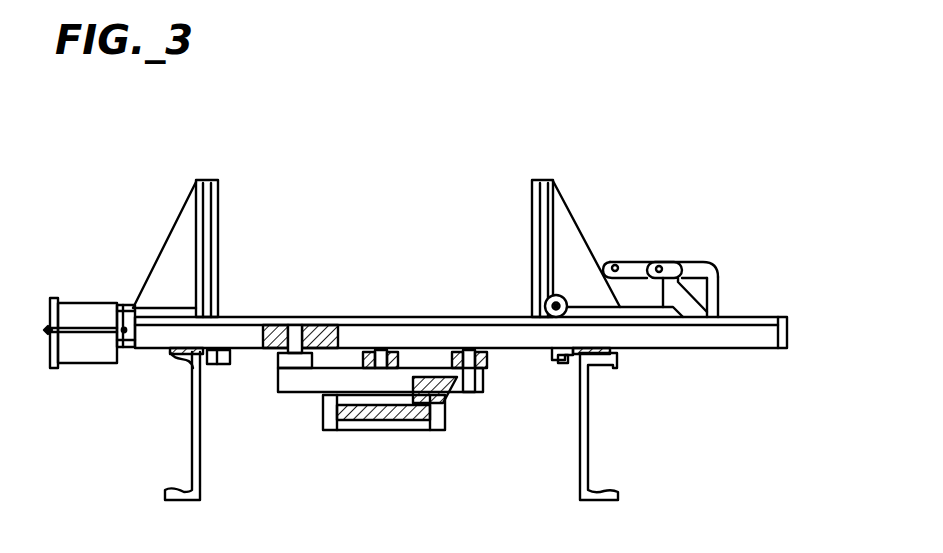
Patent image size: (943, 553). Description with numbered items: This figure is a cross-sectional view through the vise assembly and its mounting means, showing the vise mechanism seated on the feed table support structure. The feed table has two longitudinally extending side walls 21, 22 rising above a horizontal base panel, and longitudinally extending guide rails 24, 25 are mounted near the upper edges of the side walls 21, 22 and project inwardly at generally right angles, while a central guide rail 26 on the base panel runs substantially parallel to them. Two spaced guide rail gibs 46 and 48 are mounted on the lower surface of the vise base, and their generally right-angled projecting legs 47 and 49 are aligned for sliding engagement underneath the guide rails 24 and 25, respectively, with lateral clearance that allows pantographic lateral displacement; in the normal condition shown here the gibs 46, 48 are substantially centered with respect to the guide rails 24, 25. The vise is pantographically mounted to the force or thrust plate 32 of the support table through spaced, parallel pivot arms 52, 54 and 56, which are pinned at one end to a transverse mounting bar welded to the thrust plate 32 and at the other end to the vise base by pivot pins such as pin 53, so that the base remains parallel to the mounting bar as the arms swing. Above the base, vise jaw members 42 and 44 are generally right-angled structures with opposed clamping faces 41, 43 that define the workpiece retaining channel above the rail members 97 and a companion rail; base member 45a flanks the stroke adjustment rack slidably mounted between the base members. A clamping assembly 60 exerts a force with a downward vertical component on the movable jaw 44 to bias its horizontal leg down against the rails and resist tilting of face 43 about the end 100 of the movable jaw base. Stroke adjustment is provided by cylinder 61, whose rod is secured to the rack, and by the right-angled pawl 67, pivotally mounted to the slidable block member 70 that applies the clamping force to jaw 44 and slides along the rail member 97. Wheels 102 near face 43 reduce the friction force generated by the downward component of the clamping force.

The side wall 21 is at (192, 453).
The side wall 22 is at (588, 458).
The guide rail 24 is at (170, 353).
The guide rail 25 is at (562, 333).
The central guide rail 26 is at (383, 441).
The force or thrust plate 32 is at (452, 401).
The clamping face 41 is at (220, 200).
The vise jaw member 42 is at (197, 181).
The clamping face 43 is at (533, 207).
The vise jaw member 44 is at (551, 181).
The base member 45a is at (410, 337).
The guide rail gib 46 is at (220, 365).
The projecting leg 47 is at (192, 401).
The guide rail gib 48 is at (549, 358).
The projecting leg 49 is at (563, 362).
The pivot arm 52 is at (278, 366).
The pivot pin 53 is at (299, 330).
The pivot arm 54 is at (392, 350).
The pivot arm 56 is at (490, 366).
The clamping assembly 60 is at (684, 241).
The cylinder 61 is at (82, 365).
The pawl 67 is at (720, 273).
The slidable block member 70 is at (637, 271).
The rail member 97 is at (277, 317).
The end of movable jaw base 100 is at (688, 312).
The wheels 102 is at (563, 296).